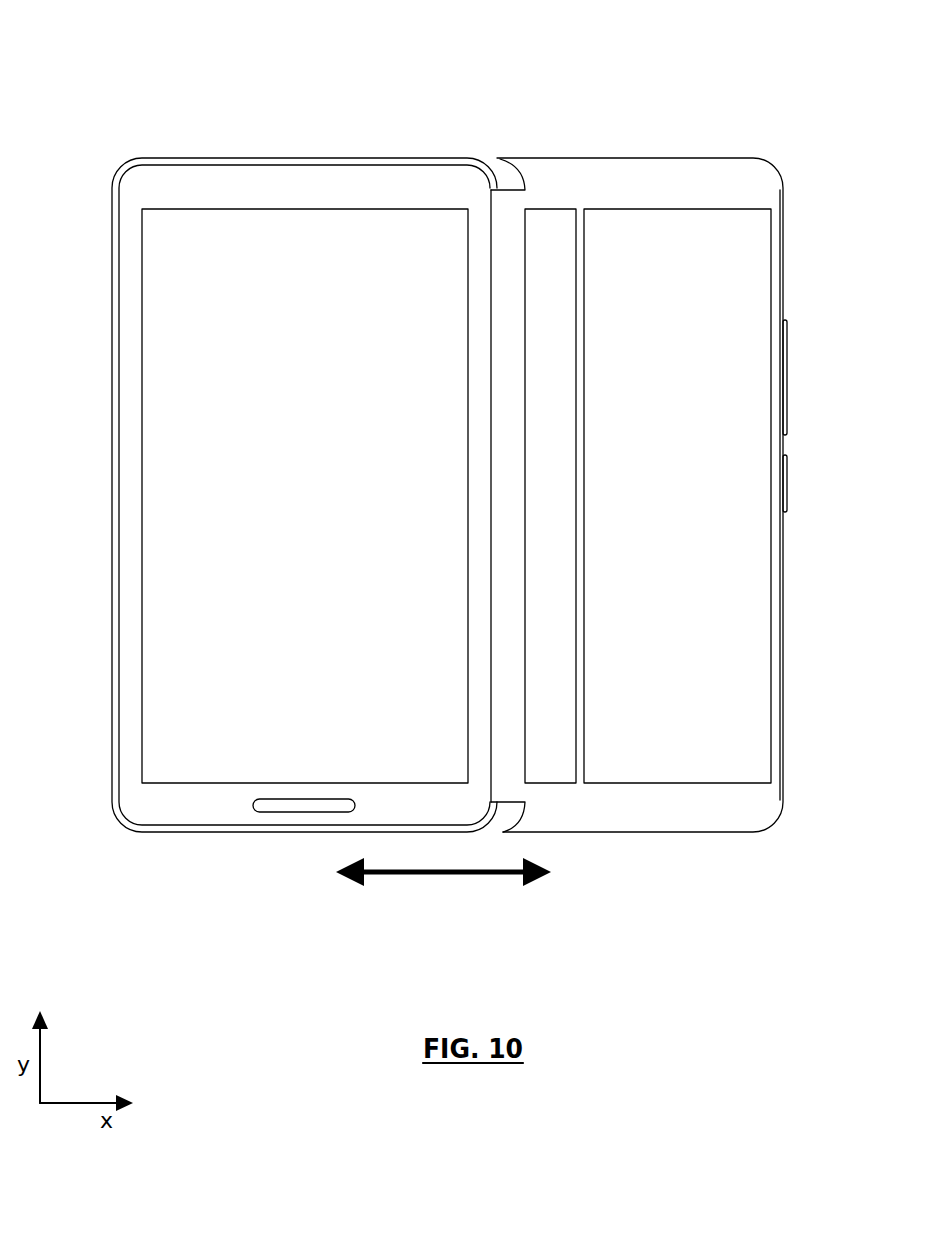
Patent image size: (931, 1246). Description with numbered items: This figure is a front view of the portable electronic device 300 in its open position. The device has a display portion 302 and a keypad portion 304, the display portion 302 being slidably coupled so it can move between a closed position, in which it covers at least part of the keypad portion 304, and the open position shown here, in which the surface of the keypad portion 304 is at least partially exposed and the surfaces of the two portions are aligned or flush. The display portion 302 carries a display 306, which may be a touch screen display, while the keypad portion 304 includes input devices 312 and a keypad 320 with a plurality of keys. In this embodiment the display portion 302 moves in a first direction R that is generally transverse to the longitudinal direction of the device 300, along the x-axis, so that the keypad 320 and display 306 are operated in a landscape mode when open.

The portable electronic device 300 is at (136, 55).
The display portion 302 is at (248, 181).
The keypad portion 304 is at (728, 823).
The display 306 is at (147, 280).
The input devices 312 is at (530, 222).
The keypad 320 is at (670, 228).
The first direction R is at (458, 874).